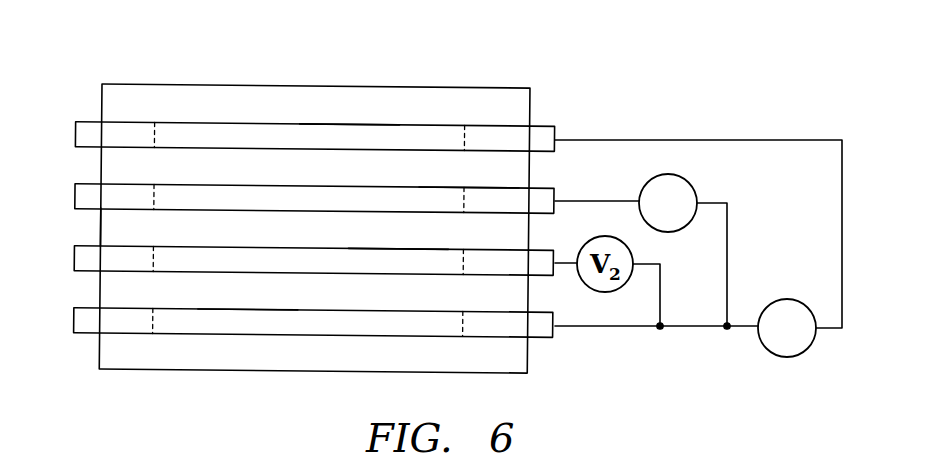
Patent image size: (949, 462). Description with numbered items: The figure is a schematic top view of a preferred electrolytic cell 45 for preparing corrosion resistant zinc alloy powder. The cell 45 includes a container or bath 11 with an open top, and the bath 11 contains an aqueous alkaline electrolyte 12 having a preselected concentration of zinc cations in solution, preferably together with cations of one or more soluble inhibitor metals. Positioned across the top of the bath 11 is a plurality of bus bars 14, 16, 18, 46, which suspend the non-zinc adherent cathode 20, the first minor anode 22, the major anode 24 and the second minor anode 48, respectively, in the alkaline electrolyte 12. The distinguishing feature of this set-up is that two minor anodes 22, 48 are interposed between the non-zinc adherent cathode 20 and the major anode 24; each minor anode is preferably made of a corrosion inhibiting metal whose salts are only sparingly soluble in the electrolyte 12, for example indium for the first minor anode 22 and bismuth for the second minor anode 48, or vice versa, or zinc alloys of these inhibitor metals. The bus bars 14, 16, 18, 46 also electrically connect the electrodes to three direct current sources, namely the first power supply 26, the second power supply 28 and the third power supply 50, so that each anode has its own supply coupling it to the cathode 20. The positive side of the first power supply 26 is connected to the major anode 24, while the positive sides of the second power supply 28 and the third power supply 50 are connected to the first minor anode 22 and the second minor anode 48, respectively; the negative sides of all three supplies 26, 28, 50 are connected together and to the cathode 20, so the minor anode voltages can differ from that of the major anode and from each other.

The bath 11 is at (201, 84).
The alkaline electrolyte 12 is at (118, 228).
The bus bar 14 is at (89, 333).
The bus bar 16 is at (88, 271).
The bus bar 18 is at (89, 121).
The non-zinc adherent cathode 20 is at (263, 333).
The first minor anode 22 is at (420, 275).
The major anode 24 is at (322, 156).
The first power supply 26 is at (788, 299).
The second power supply 28 is at (594, 292).
The electrolytic cell 45 is at (300, 72).
The bus bar 46 is at (88, 184).
The second minor anode 48 is at (447, 185).
The third power supply 50 is at (694, 183).